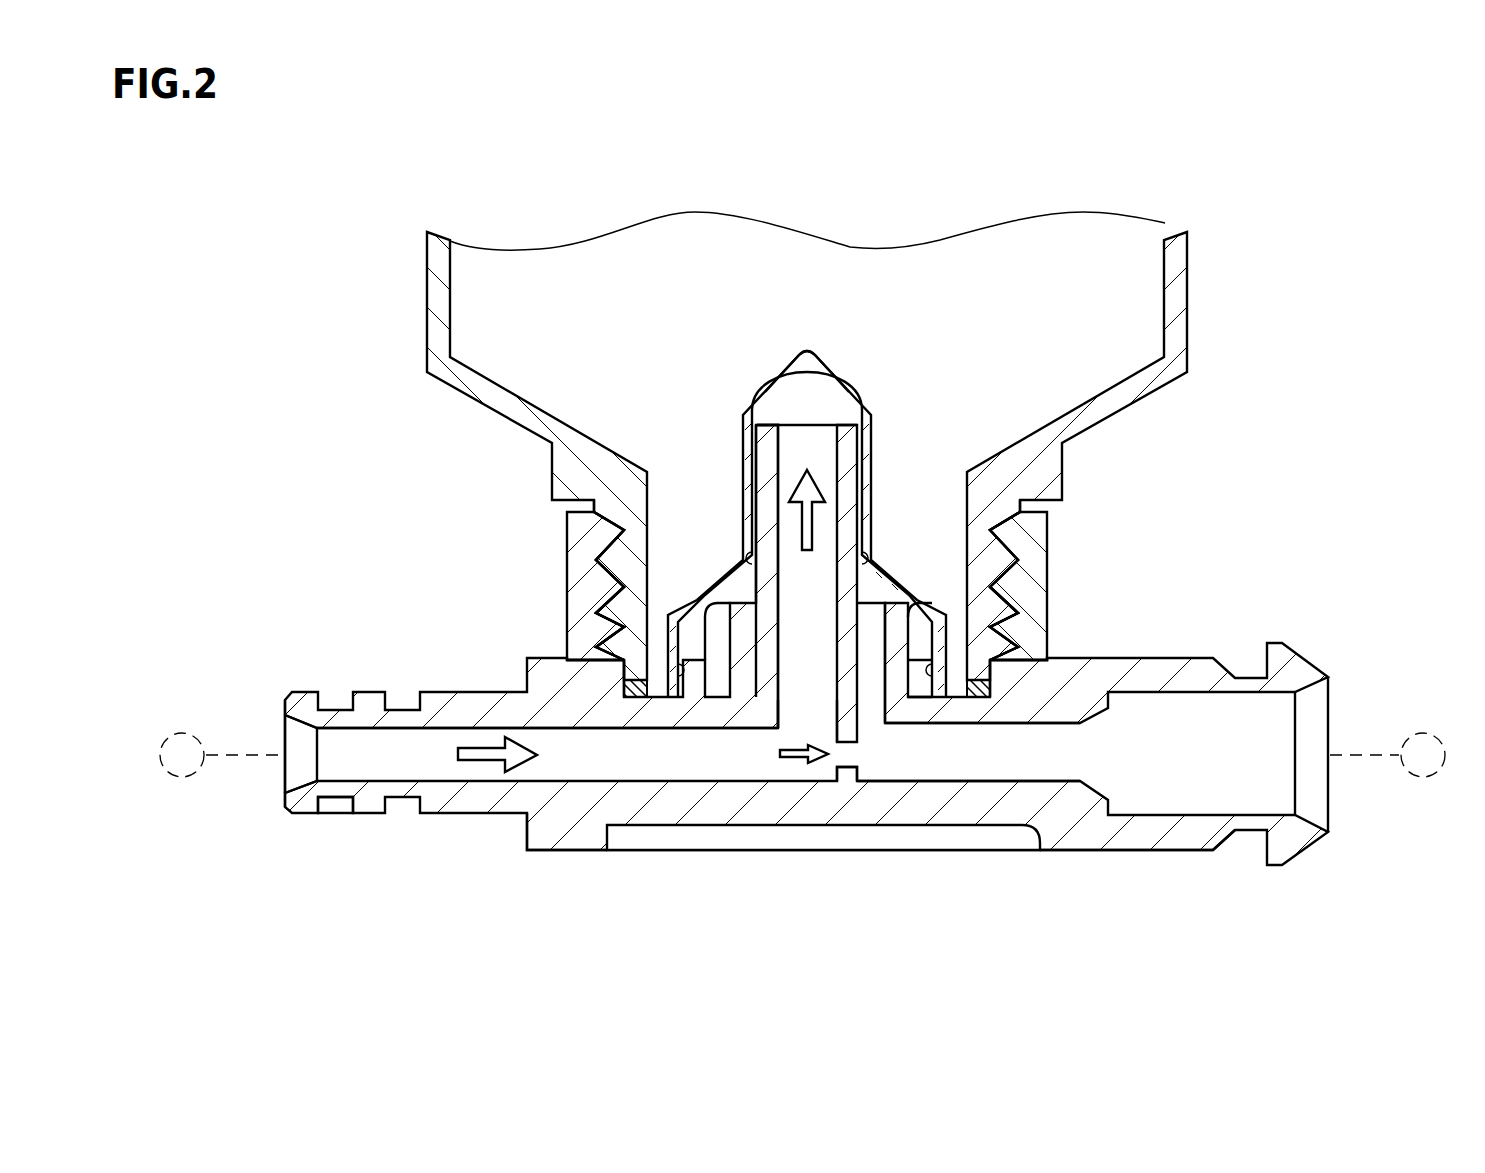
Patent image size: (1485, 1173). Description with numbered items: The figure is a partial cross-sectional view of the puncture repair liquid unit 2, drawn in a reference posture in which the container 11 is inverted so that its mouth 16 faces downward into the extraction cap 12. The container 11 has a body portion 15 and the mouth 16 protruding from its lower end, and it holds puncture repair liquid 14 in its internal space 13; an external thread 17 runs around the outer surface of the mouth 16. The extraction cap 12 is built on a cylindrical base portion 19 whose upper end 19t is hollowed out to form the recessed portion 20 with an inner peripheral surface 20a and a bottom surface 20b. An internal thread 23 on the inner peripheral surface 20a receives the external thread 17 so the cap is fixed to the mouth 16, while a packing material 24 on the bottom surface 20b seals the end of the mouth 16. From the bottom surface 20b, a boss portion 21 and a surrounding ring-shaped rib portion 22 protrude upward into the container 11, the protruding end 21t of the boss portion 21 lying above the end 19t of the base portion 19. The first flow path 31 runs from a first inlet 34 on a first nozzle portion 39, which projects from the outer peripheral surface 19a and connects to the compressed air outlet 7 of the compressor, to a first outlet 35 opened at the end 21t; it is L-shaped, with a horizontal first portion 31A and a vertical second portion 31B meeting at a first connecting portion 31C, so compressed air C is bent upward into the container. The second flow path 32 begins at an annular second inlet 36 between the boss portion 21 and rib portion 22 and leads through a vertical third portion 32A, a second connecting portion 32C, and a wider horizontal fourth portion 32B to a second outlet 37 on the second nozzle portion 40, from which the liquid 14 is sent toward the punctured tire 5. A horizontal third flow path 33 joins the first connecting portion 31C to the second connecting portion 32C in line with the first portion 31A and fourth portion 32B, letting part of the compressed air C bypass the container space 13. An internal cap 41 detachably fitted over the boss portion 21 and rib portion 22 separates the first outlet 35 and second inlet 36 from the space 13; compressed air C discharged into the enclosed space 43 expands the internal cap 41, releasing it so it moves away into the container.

The puncture repair liquid unit 2 is at (1242, 213).
The punctured tire 5 is at (1417, 780).
The compressed air outlet 7 is at (166, 776).
The container 11 is at (1322, 276).
The extraction cap 12 is at (378, 424).
The space 13 is at (1091, 257).
The puncture repair liquid 14 is at (532, 290).
The body portion 15 is at (1192, 297).
The mouth 16 is at (964, 528).
The external thread 17 is at (1007, 547).
The base portion 19 is at (565, 578).
The outer peripheral surface 19a is at (527, 838).
The one end 19t is at (1040, 512).
The recessed portion 20 is at (437, 575).
The inner peripheral surface 20a is at (622, 613).
The bottom surface 20b is at (618, 655).
The boss portion 21 is at (755, 500).
The one end 21t is at (845, 427).
The rib portion 22 is at (700, 633).
The internal thread 23 is at (978, 690).
The packing material 24 is at (1003, 692).
The first flow path 31 is at (808, 930).
The first portion 31A is at (610, 755).
The second portion 31B is at (803, 675).
The first connecting portion 31C is at (830, 775).
The second flow path 32 is at (1100, 930).
The third portion 32A is at (873, 688).
The fourth portion 32B is at (1018, 758).
The second connecting portion 32C is at (883, 760).
The third flow path 33 is at (853, 757).
The first inlet 34 is at (283, 777).
The first outlet 35 is at (813, 423).
The second inlet 36 is at (992, 600).
The second outlet 37 is at (1330, 803).
The first nozzle portion 39 is at (372, 817).
The second nozzle portion 40 is at (1202, 855).
The internal cap 41 is at (777, 366).
The space 43 is at (778, 413).
The compressed air C is at (817, 523).